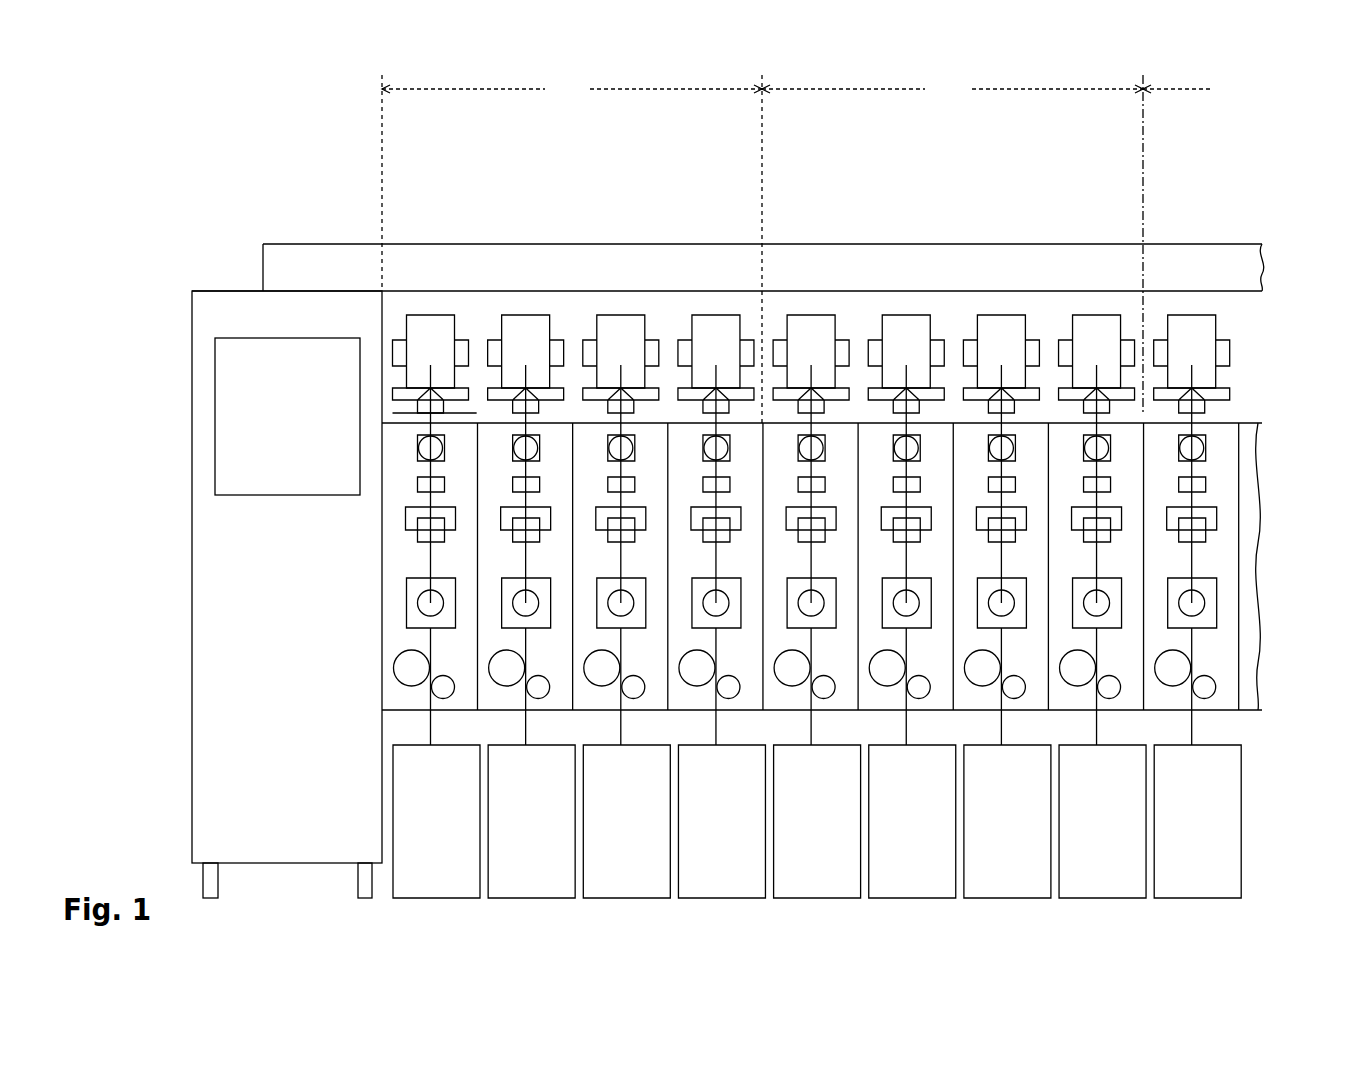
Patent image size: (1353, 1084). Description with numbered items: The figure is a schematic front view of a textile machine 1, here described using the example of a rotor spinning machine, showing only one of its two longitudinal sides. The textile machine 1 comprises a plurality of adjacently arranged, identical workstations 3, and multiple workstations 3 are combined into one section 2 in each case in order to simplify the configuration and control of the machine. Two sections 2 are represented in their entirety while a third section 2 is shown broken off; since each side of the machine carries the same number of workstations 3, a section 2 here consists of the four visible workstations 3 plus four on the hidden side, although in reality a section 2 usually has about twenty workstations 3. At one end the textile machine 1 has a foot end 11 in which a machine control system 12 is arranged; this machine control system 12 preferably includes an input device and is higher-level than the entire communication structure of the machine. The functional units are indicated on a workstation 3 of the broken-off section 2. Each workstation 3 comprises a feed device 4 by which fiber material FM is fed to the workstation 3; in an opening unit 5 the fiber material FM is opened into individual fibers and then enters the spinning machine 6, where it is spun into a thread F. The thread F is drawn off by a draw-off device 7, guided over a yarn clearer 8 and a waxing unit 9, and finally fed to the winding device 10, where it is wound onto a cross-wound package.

The textile machine 1 is at (273, 175).
The section 2 is at (811, 249).
The workstation 3 is at (816, 427).
The feed device 4 is at (1210, 685).
The opening unit 5 is at (1173, 650).
The spinning machine 6 is at (1218, 595).
The draw-off device 7 is at (1220, 520).
The yarn clearer 8 is at (1205, 475).
The waxing unit 9 is at (1205, 447).
The winding device 10 is at (1227, 385).
The foot end 11 is at (251, 594).
The machine control system 12 is at (265, 341).
The thread F is at (1197, 565).
The fiber material FM is at (1192, 737).